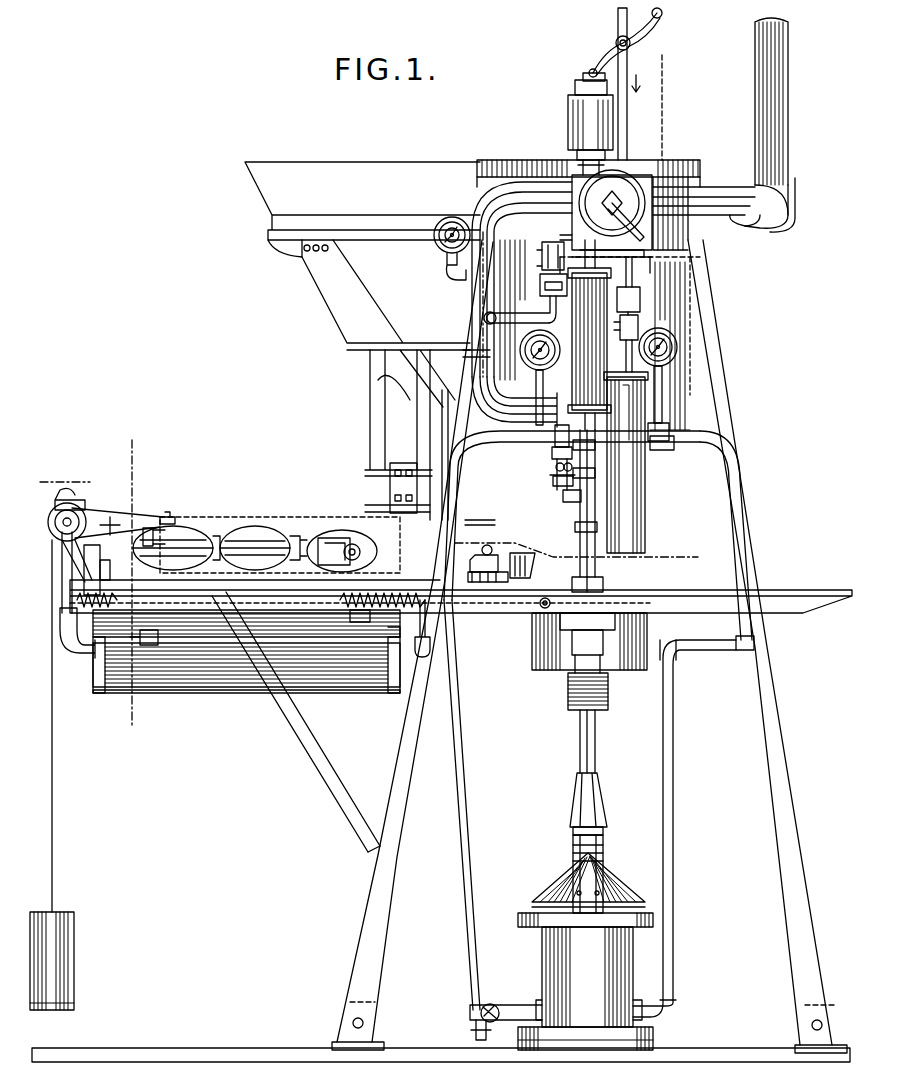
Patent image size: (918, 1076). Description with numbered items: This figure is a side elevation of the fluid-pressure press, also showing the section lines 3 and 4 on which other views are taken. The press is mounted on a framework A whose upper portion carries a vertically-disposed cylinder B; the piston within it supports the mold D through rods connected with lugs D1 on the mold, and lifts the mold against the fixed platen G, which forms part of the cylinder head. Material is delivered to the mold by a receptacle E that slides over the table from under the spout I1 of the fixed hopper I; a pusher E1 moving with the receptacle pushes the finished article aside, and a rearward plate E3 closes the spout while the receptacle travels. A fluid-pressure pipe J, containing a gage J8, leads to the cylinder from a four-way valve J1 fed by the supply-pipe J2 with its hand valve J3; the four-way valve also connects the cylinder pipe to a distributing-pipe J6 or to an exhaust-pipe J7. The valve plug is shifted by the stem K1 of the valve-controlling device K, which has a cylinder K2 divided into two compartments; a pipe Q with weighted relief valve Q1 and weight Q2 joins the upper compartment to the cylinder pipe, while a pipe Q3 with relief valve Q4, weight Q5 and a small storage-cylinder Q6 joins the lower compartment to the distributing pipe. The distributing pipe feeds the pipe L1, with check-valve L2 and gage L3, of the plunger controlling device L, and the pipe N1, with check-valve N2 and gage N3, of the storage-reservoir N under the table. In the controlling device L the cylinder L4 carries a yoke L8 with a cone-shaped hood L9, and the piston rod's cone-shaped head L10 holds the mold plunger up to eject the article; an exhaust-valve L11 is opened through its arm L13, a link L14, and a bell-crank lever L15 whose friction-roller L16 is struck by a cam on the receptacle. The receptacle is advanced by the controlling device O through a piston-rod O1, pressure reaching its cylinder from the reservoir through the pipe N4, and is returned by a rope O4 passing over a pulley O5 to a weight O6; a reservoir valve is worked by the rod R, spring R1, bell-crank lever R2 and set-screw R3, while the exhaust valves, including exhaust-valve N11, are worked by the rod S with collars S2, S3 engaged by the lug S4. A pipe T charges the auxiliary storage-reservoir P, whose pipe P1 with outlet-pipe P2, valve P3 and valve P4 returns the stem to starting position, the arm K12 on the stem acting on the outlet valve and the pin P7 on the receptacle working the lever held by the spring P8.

The framework A is at (388, 782).
The cylinder B is at (692, 234).
The mold D is at (532, 662).
The lugs D1 is at (633, 617).
The receptacle E is at (403, 520).
The pusher E1 is at (525, 552).
The plate E3 is at (295, 525).
The platen G is at (575, 475).
The hopper I is at (340, 313).
The spout I1 is at (392, 442).
The fluid-pressure pipe J is at (480, 292).
The four-way valve J1 is at (643, 177).
The supply-pipe J2 is at (624, 72).
The valve J3 is at (616, 40).
The distributing-pipe J6 is at (645, 268).
The exhaust-pipe J7 is at (787, 130).
The gage J8 is at (448, 219).
The valve-controlling device K is at (525, 358).
The stem K1 is at (570, 173).
The cylinder K2 is at (595, 800).
The arm K12 is at (603, 556).
The controlling device L is at (583, 981).
The pipe L1 is at (722, 462).
The check-valve L2 is at (637, 440).
The gage L3 is at (680, 352).
The cylinder L4 is at (633, 968).
The yoke L8 is at (603, 845).
The cone-shaped hood L9 is at (562, 880).
The cone-shaped head L10 is at (569, 829).
The exhaust-valve L11 is at (496, 1005).
The arm L13 is at (472, 1030).
The link L14 is at (466, 905).
The bell-crank lever L15 is at (488, 546).
The friction-roller L16 is at (497, 555).
The storage-reservoir N is at (217, 690).
The pipe N1 is at (432, 640).
The check-valve N2 is at (552, 462).
The gage N3 is at (463, 355).
The pipe N4 is at (70, 650).
The exhaust-valve N11 is at (70, 500).
The controlling device O is at (250, 540).
The piston-rod O1 is at (345, 545).
The rope O4 is at (112, 517).
The pulley O5 is at (82, 504).
The weight O6 is at (75, 912).
The auxiliary storage-reservoir P is at (318, 640).
The pipe P1 is at (461, 466).
The outlet-pipe P2 is at (557, 450).
The valve P3 is at (553, 483).
The valve P4 is at (573, 503).
The pin P7 is at (465, 520).
The spring P8 is at (360, 623).
The pipe Q is at (537, 319).
The relief-valve Q1 is at (541, 287).
The weight Q2 is at (553, 257).
The pipe Q3 is at (589, 343).
The relief-valve Q4 is at (640, 326).
The weight Q5 is at (645, 300).
The storage-cylinder Q6 is at (637, 527).
The rod R is at (293, 612).
The spring R1 is at (113, 613).
The bell-crank lever R2 is at (550, 605).
The set-screw R3 is at (560, 645).
The rod S is at (192, 537).
The collar S2 is at (148, 527).
The collar S3 is at (357, 533).
The lug S4 is at (165, 517).
The pipe T is at (138, 577).
The section line 3- 3 is at (132, 600).
The section line 4- 4 is at (369, 519).